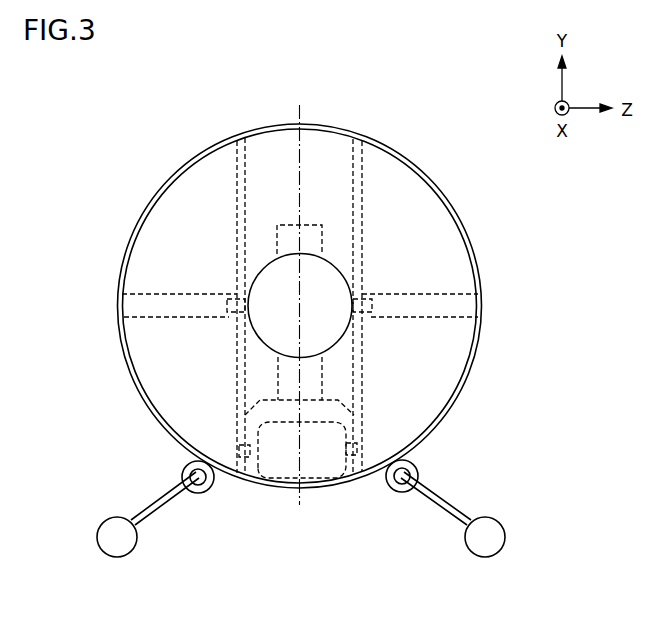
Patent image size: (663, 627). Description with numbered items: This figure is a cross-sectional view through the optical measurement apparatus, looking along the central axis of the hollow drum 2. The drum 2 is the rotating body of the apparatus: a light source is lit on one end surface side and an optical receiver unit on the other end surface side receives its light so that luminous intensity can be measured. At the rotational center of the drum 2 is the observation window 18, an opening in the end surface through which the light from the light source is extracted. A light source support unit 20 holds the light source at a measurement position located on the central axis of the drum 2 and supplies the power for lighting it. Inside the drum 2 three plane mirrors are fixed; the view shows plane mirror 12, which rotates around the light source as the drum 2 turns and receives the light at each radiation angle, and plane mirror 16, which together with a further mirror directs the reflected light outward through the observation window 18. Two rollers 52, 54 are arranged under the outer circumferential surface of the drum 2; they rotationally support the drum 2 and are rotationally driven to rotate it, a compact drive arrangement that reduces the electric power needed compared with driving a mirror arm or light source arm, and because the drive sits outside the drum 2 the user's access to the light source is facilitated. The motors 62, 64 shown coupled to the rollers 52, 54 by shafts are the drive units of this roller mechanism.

The drum 2 is at (398, 181).
The plane mirror 12 is at (342, 418).
The plane mirror 16 is at (317, 469).
The observation window 18 is at (333, 325).
The light source support unit 20 is at (290, 375).
The roller 52 is at (397, 493).
The roller 54 is at (203, 493).
The motor 62 is at (485, 557).
The motor 64 is at (118, 557).